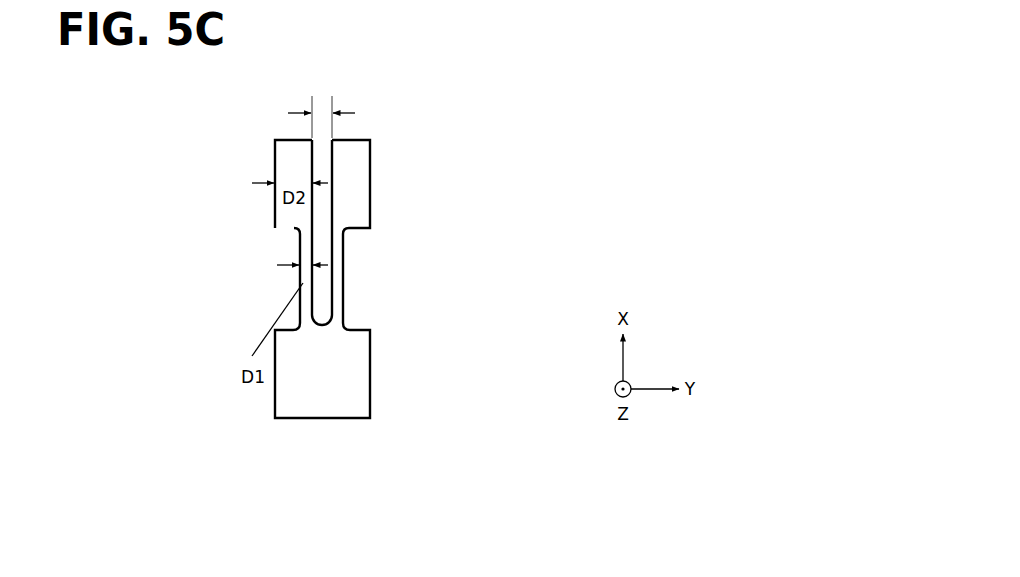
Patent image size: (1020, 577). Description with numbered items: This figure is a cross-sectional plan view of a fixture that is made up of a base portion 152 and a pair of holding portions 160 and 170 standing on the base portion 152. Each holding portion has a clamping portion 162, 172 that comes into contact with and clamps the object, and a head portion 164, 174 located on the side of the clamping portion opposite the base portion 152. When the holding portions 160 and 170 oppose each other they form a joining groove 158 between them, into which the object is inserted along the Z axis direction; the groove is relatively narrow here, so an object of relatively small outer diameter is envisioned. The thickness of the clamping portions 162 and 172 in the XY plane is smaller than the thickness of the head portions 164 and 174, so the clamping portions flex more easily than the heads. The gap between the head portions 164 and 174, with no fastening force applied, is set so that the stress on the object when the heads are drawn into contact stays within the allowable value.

The base portion 152 is at (352, 407).
The joining groove 158 is at (325, 288).
The holding portion 160 is at (386, 198).
The clamping portion 162 is at (388, 230).
The head portion 164 is at (388, 140).
The holding portion 170 is at (252, 198).
The clamping portion 172 is at (243, 230).
The head portion 174 is at (243, 140).